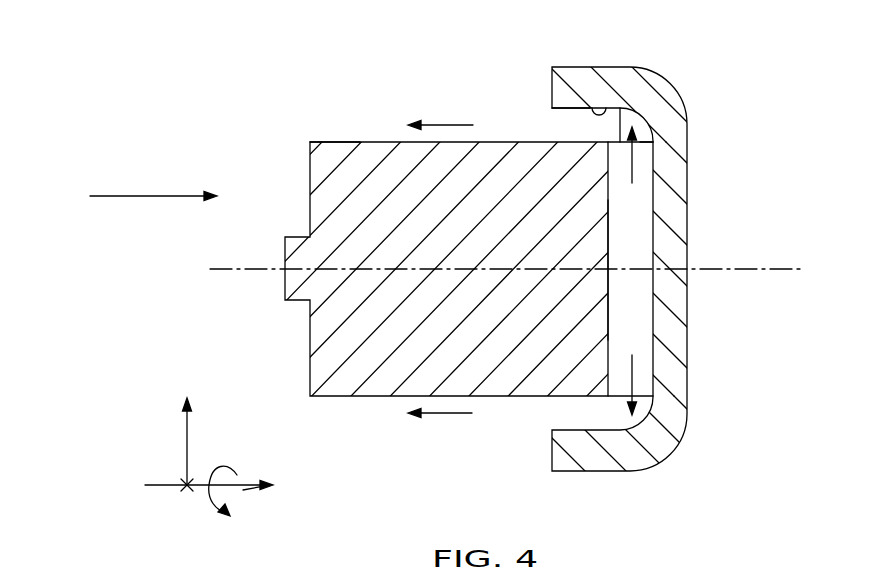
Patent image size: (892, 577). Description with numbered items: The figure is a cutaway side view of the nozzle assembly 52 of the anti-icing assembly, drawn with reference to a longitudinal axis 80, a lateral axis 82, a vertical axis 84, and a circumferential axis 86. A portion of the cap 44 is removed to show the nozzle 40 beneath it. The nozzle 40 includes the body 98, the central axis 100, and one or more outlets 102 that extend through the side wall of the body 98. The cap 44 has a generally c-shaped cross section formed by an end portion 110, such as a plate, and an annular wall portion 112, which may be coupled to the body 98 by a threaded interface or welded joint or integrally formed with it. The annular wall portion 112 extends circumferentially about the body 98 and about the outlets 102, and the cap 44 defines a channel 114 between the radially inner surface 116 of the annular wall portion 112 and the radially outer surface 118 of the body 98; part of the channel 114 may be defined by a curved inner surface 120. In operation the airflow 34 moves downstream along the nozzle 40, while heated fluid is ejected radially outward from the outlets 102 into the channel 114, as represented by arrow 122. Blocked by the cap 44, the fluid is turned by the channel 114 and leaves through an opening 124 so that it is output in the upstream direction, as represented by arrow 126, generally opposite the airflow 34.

The airflow 34 is at (145, 198).
The nozzle 40 is at (310, 207).
The cap 44 is at (670, 83).
The nozzle assembly 52 is at (690, 36).
The longitudinal axis 80 is at (243, 490).
The lateral axis 82 is at (194, 487).
The vertical axis 84 is at (182, 447).
The circumferential axis 86 is at (222, 460).
The body 98 is at (335, 150).
The central axis 100 is at (250, 269).
The outlets 102 is at (632, 287).
The end portion 110 is at (670, 242).
The annular wall portion 112 is at (572, 67).
The channel 114 is at (562, 113).
The radially inner surface 116 is at (610, 104).
The radially outer surface 118 is at (566, 141).
The curved inner surface 120 is at (645, 137).
The arrow 122 is at (636, 167).
The opening 124 is at (558, 423).
The arrow 126 is at (447, 123).